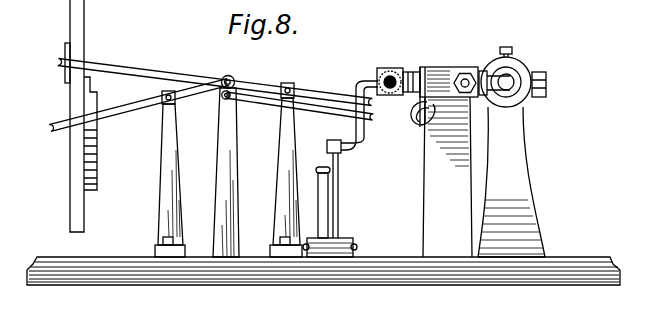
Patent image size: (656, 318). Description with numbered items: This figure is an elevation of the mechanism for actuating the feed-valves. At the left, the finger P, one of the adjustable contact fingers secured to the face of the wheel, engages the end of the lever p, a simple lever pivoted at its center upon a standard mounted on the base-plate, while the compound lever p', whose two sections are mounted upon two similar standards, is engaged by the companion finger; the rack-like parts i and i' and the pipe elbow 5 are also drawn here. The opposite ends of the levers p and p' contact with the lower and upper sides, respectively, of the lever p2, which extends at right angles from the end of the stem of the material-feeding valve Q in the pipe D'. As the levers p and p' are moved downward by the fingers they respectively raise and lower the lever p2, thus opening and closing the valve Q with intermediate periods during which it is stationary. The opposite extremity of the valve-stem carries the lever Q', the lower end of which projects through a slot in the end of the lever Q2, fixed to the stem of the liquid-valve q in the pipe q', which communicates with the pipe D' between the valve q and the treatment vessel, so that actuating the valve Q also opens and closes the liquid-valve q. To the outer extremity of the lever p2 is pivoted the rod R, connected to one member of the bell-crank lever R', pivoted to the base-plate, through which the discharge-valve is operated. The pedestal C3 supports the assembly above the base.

The finger P is at (66, 48).
The lever p is at (215, 70).
The compound lever p' is at (139, 117).
The upper rack step i' is at (96, 103).
The rack teeth i is at (98, 160).
The pipe elbow 5 is at (356, 94).
The lever p2 is at (364, 131).
The rod R is at (287, 202).
The bell-crank lever R' is at (335, 198).
The material-feeding valve Q is at (398, 66).
The lever Q' is at (411, 97).
The lever Q2 is at (454, 106).
The liquid-valve q is at (464, 64).
The pipe q' is at (494, 60).
The pipe D' is at (516, 72).
The pedestal column C3 is at (511, 182).